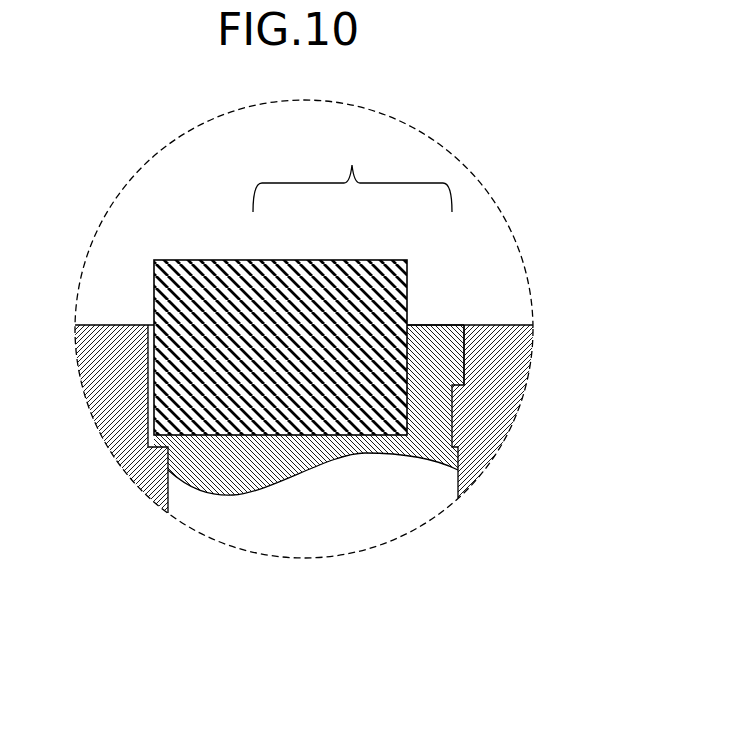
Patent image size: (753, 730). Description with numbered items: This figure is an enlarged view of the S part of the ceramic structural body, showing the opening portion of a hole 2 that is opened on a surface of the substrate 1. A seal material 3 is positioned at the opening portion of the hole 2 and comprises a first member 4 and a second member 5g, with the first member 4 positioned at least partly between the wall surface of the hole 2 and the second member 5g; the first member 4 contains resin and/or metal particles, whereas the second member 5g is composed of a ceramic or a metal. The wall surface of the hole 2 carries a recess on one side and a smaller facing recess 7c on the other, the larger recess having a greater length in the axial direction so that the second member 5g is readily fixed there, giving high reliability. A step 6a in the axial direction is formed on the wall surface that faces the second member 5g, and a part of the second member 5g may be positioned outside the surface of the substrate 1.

The S part S is at (418, 128).
The substrate 1 is at (122, 408).
The hole 2 is at (292, 530).
The seal material 3 is at (352, 166).
The first member 4 is at (435, 328).
The second member 5g is at (299, 283).
The step 6a is at (452, 402).
The recess 7c is at (450, 330).